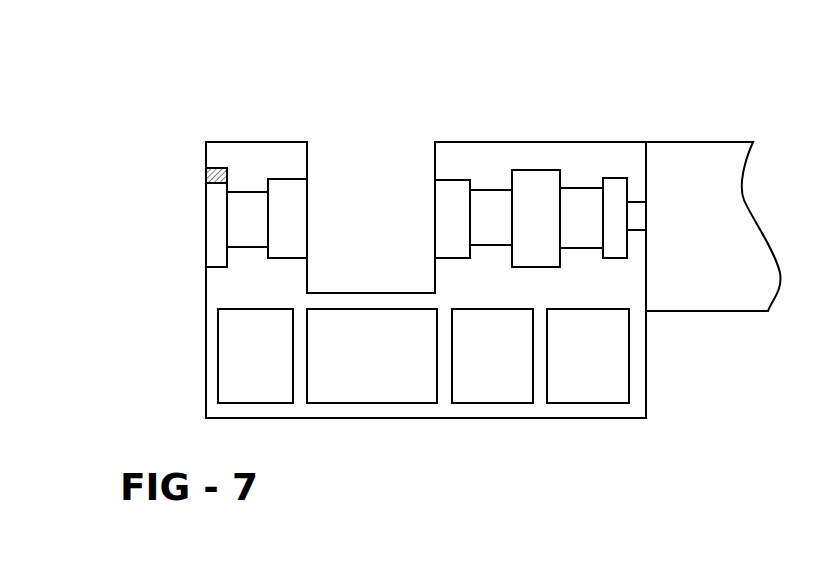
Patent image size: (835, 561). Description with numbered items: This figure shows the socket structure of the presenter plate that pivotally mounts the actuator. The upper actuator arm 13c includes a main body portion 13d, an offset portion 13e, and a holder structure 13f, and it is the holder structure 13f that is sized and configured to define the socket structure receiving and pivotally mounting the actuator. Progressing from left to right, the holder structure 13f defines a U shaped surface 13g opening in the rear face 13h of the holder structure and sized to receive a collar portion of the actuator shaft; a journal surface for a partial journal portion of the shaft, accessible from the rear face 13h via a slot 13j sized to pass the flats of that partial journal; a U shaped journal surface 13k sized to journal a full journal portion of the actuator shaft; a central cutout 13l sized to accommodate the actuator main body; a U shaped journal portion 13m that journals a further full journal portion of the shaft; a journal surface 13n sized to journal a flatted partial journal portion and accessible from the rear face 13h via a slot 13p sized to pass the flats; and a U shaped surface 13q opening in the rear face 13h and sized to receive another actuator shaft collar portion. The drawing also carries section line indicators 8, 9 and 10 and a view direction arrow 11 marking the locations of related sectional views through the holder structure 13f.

The holder structure 13f is at (196, 363).
The rear face 13h is at (392, 366).
The main body portion 13d is at (735, 286).
The U shaped surface 13g is at (204, 183).
The slot 13j is at (247, 247).
The U shaped journal surface 13k is at (288, 251).
The central cutout 13l is at (433, 165).
The journal surface 13n is at (480, 218).
The U shaped journal portion 13m is at (465, 246).
The slot 13p is at (485, 245).
The offset portion 13e is at (563, 189).
The U shaped surface 13q is at (566, 247).
The upper actuator arm 13c is at (628, 214).
The section line 10- 10 is at (379, 75).
The section line 9- 9 is at (532, 50).
The section line 8- 8 is at (625, 50).
The view direction arrow 11 is at (94, 282).